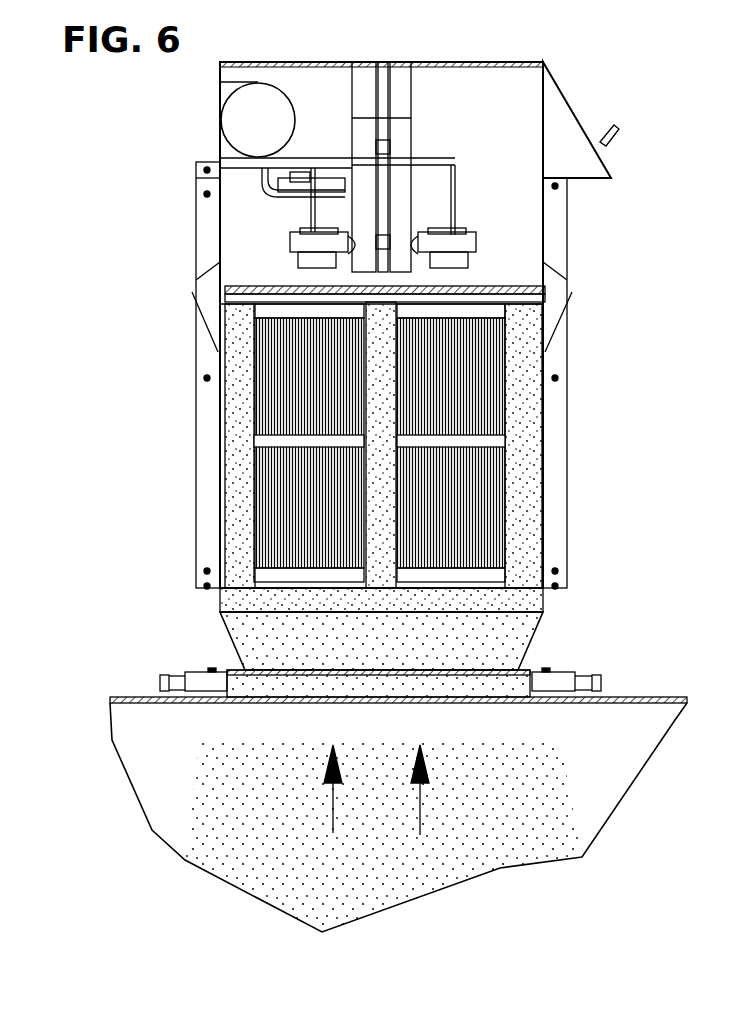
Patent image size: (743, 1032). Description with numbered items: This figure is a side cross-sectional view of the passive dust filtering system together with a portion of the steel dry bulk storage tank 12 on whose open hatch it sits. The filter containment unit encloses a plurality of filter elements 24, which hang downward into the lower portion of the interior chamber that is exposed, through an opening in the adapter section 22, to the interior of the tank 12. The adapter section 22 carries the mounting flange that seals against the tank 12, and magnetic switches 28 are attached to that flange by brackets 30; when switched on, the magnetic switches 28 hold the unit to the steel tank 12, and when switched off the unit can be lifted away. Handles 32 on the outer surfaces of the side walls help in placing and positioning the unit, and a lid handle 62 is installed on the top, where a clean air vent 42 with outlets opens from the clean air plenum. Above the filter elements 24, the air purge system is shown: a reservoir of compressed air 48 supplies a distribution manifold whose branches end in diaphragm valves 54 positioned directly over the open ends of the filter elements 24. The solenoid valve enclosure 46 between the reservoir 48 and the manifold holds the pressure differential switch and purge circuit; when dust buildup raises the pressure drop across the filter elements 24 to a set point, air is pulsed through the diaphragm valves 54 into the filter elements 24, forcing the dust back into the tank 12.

The tank 12 is at (670, 696).
The adapter section 22 is at (250, 636).
The filter elements 24 is at (466, 392).
The magnetic switches 28 is at (582, 672).
The brackets 30 is at (200, 668).
The handles 32 is at (193, 291).
The clean air vent 42 is at (590, 178).
The solenoid valve enclosure 46 is at (337, 128).
The reservoir of compressed air 48 is at (246, 121).
The diaphragm valves 54 is at (302, 252).
The lid handle 62 is at (618, 134).